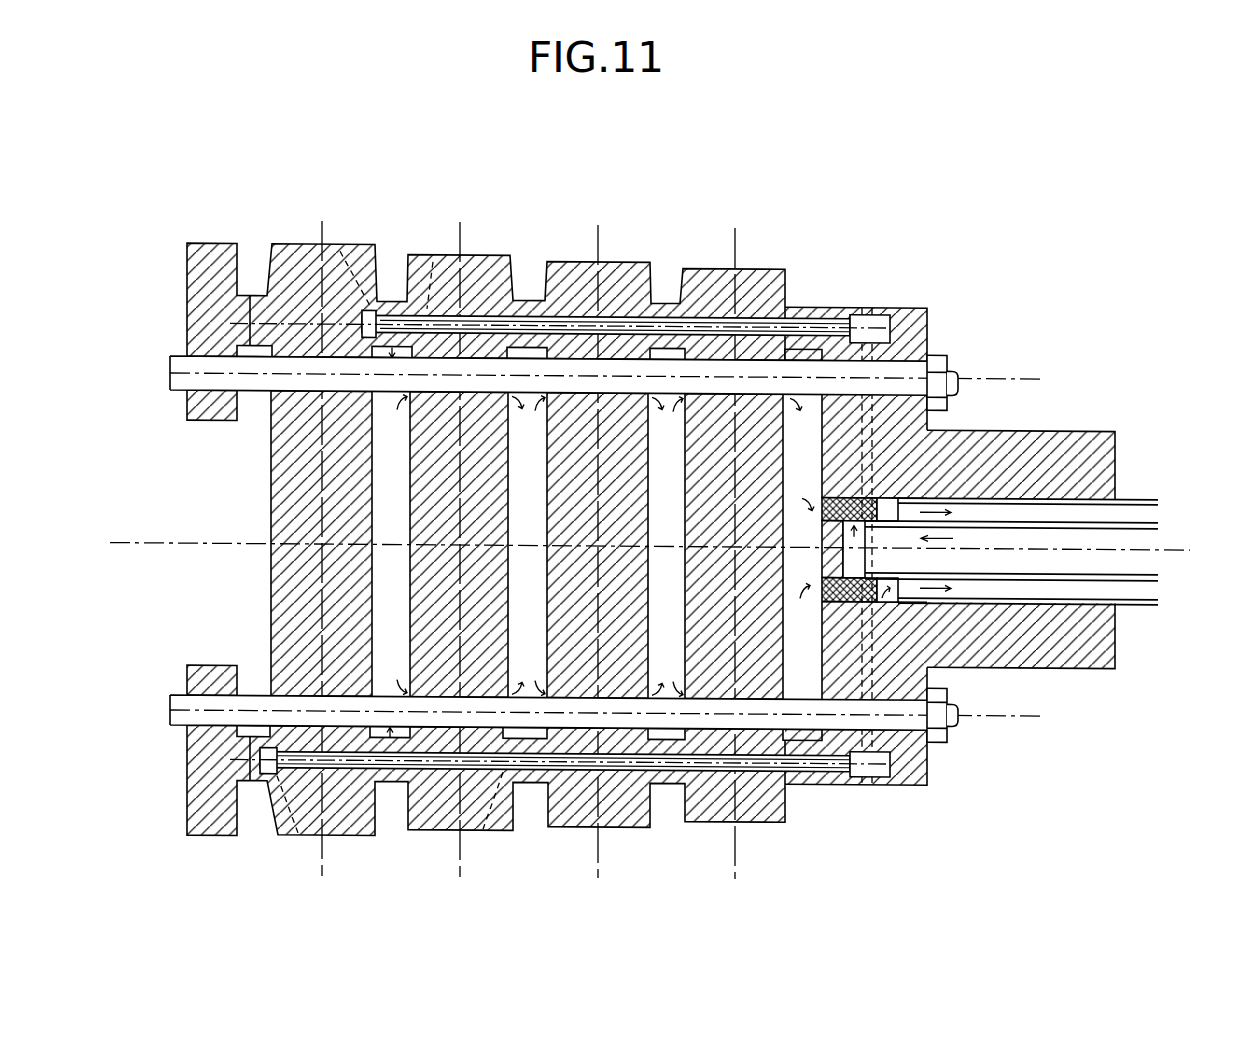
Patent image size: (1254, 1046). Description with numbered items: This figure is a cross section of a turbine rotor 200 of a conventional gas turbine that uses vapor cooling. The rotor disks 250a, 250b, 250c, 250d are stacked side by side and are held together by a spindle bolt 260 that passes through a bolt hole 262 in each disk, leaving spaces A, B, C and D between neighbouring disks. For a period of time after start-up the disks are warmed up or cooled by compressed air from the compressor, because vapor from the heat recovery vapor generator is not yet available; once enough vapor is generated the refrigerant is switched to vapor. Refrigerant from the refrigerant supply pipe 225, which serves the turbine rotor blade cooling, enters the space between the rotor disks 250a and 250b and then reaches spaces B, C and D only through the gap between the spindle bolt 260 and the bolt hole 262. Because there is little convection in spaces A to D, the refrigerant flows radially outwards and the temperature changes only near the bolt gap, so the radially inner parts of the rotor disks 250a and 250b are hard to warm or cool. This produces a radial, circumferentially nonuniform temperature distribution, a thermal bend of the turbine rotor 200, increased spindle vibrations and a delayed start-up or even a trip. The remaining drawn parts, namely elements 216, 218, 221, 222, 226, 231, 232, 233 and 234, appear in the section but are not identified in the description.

The turbine rotor 200 is at (921, 238).
The housing 216 is at (1076, 446).
The end plate 218 is at (204, 243).
The inner tube 221 is at (1145, 535).
The outer tube 222 is at (1122, 495).
The refrigerant supply pipe 225 is at (746, 326).
The lower manifold pipe 226 is at (820, 781).
The inlet port 231 is at (350, 247).
The inlet port 232 is at (283, 836).
The outlet port 233 is at (433, 258).
The outlet port 234 is at (495, 836).
The rotor disk 250a is at (290, 243).
The rotor disk 250b is at (482, 257).
The rotor disk 250c is at (568, 262).
The rotor disk 250d is at (697, 268).
The spindle bolt 260 is at (912, 340).
The bolt hole 262 is at (817, 304).